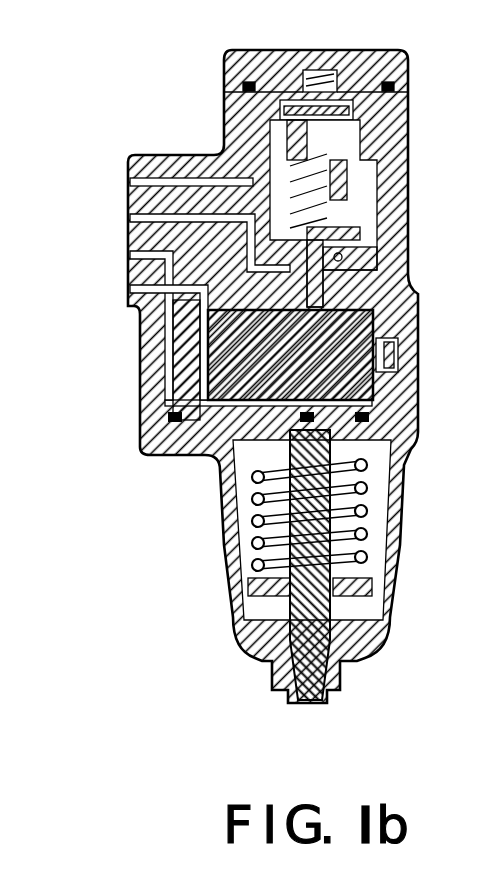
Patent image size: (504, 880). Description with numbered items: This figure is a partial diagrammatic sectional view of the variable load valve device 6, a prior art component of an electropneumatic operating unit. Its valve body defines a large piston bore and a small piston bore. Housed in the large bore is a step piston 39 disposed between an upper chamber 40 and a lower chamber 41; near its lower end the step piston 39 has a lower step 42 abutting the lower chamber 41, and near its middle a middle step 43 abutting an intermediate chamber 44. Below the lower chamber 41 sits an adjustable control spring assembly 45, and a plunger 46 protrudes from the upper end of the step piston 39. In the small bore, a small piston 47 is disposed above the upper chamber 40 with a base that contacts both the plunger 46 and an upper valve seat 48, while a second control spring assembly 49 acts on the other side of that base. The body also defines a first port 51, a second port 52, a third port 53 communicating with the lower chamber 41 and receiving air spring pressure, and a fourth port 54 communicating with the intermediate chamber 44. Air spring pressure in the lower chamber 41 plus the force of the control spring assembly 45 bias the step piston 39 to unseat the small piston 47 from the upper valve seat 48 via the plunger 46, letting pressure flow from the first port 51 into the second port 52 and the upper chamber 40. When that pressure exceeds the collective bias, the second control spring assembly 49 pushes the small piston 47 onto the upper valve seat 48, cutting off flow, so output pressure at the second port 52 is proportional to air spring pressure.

The variable load valve device 6 is at (190, 106).
The step piston 39 is at (340, 342).
The upper chamber 40 is at (404, 280).
The lower chamber 41 is at (372, 492).
The lower step 42 is at (282, 463).
The middle step 43 is at (363, 404).
The intermediate chamber 44 is at (230, 401).
The adjustable control spring assembly 45 is at (363, 515).
The plunger 46 is at (404, 240).
The small piston 47 is at (404, 178).
The upper valve seat 48 is at (404, 206).
The second control spring assembly 49 is at (404, 121).
The first port 51 is at (128, 182).
The second port 52 is at (128, 217).
The third port 53 is at (128, 255).
The fourth port 54 is at (128, 289).